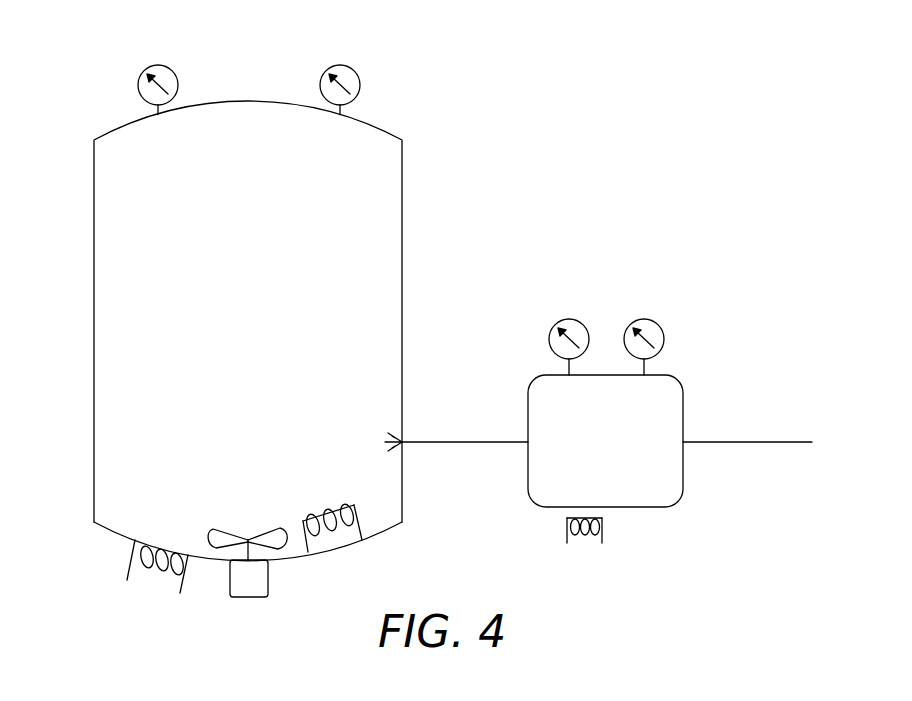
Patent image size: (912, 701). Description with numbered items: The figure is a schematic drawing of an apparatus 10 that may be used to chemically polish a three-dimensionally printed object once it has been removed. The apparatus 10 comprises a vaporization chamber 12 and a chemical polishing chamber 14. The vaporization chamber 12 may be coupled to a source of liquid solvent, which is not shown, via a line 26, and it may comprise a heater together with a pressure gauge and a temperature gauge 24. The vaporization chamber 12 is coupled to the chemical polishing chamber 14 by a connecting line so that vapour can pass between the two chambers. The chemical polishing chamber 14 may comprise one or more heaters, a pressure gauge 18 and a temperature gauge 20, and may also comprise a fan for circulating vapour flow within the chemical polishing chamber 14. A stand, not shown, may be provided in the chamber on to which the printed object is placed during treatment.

The apparatus 10 is at (86, 74).
The vaporization chamber 12 is at (457, 441).
The chemical polishing chamber 14 is at (403, 186).
The pressure gauge 18 is at (358, 72).
The temperature gauge 20 is at (175, 72).
The temperature gauge 24 is at (587, 323).
The line 26 is at (740, 441).